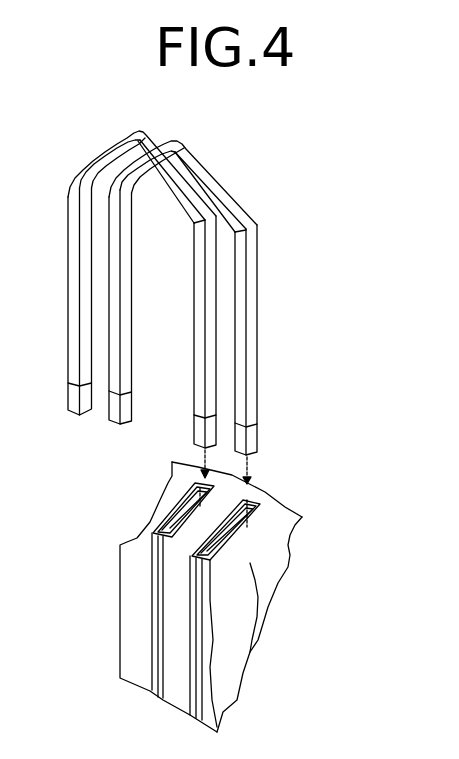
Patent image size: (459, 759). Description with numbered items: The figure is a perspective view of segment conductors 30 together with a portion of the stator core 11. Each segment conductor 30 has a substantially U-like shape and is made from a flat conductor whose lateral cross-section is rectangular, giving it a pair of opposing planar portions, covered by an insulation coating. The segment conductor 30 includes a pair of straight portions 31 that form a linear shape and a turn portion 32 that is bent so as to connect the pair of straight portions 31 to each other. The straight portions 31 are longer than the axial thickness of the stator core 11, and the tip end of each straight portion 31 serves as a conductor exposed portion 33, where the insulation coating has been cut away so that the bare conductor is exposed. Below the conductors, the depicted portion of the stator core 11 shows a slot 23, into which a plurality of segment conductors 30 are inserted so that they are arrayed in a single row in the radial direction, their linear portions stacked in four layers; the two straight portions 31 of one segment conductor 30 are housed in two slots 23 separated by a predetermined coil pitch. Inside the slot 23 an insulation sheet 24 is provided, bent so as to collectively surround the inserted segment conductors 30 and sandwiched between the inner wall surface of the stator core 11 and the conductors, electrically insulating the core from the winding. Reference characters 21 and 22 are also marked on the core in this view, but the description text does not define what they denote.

The stator core 11 is at (250, 584).
The end face of stator core 21 is at (290, 511).
The slot 22 is at (172, 540).
The slot 23 is at (262, 563).
The insulation sheet 24 is at (250, 537).
The segment conductor 30 is at (196, 279).
The straight portion 31 is at (208, 347).
The turn portion 32 is at (214, 168).
The conductor exposed portion 33 is at (257, 431).